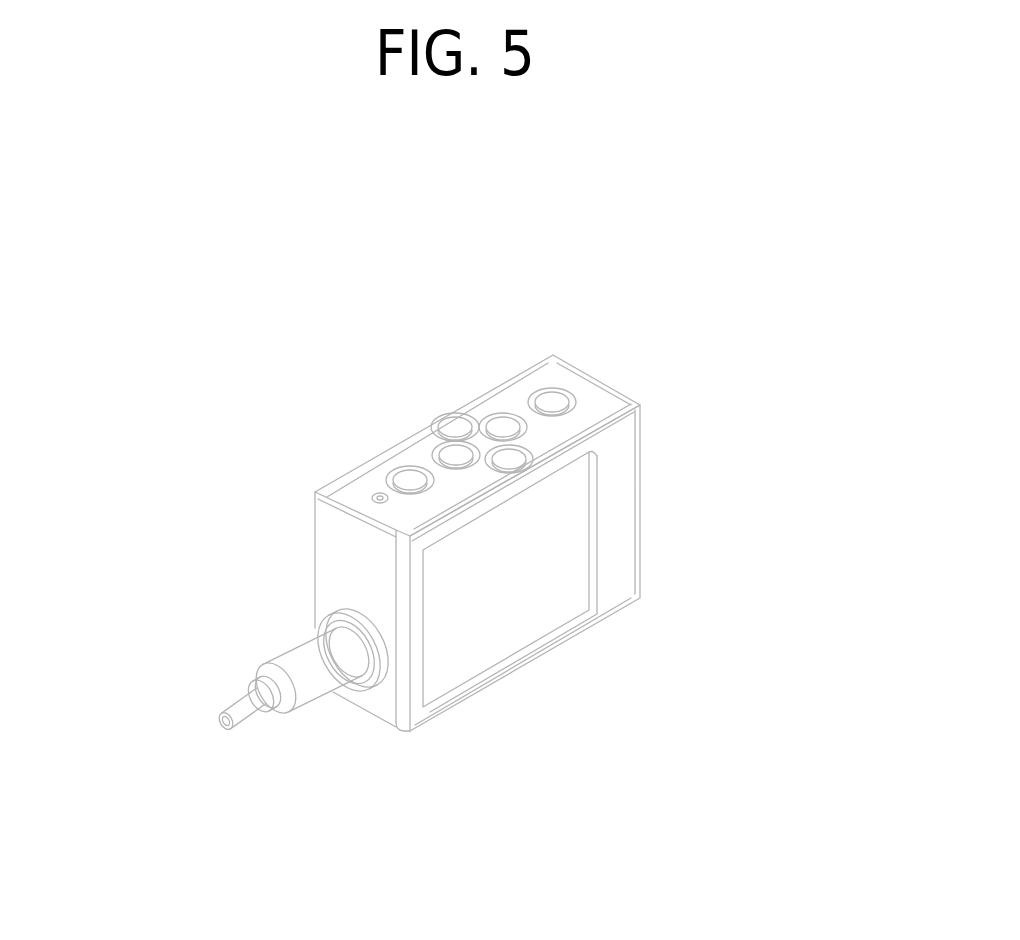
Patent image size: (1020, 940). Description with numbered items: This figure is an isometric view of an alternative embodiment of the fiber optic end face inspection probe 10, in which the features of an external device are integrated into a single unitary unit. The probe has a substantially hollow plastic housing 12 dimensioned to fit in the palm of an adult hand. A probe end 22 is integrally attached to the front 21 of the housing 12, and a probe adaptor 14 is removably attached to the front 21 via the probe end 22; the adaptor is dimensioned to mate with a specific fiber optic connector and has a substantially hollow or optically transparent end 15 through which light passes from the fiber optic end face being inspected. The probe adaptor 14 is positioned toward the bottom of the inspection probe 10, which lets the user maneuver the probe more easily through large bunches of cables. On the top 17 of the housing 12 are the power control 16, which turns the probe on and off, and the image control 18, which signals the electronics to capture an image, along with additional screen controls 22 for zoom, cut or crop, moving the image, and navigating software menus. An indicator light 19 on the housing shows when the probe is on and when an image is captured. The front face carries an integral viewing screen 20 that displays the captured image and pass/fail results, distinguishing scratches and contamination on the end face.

The inspection probe 10 is at (436, 470).
The housing 12 is at (554, 568).
The probe adaptor 14 is at (241, 701).
The end 15 is at (221, 718).
The power control 16 is at (551, 400).
The top 17 is at (613, 401).
The image control 18 is at (408, 470).
The indicator light 19 is at (379, 494).
The viewing screen 20 is at (522, 590).
The front 21 is at (378, 698).
The probe end / screen controls 22 is at (170, 523).